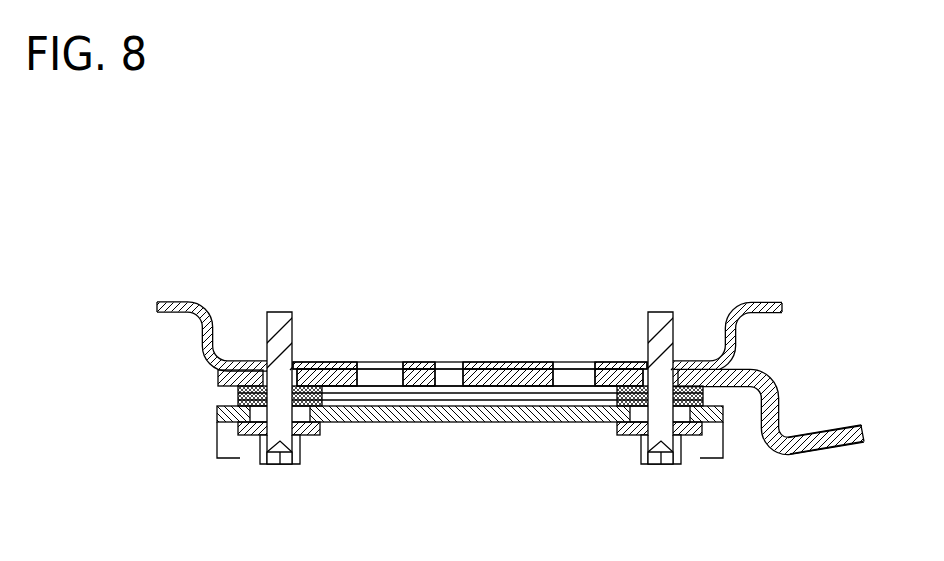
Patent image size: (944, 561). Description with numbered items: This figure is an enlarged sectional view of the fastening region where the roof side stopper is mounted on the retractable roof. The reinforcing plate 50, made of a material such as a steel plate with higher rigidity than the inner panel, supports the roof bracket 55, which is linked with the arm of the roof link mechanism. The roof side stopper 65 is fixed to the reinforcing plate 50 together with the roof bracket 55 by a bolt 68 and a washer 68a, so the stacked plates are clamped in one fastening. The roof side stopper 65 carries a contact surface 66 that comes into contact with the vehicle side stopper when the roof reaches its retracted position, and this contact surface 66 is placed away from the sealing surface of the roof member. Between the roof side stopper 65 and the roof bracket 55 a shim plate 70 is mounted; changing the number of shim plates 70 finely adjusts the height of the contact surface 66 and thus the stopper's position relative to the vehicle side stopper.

The reinforcing plate 50 is at (178, 300).
The roof bracket 55 is at (223, 435).
The roof side stopper 65 is at (773, 378).
The contact surface 66 is at (838, 449).
The bolt 68 is at (300, 456).
The washer 68a is at (322, 437).
The shim plate 70 is at (238, 396).